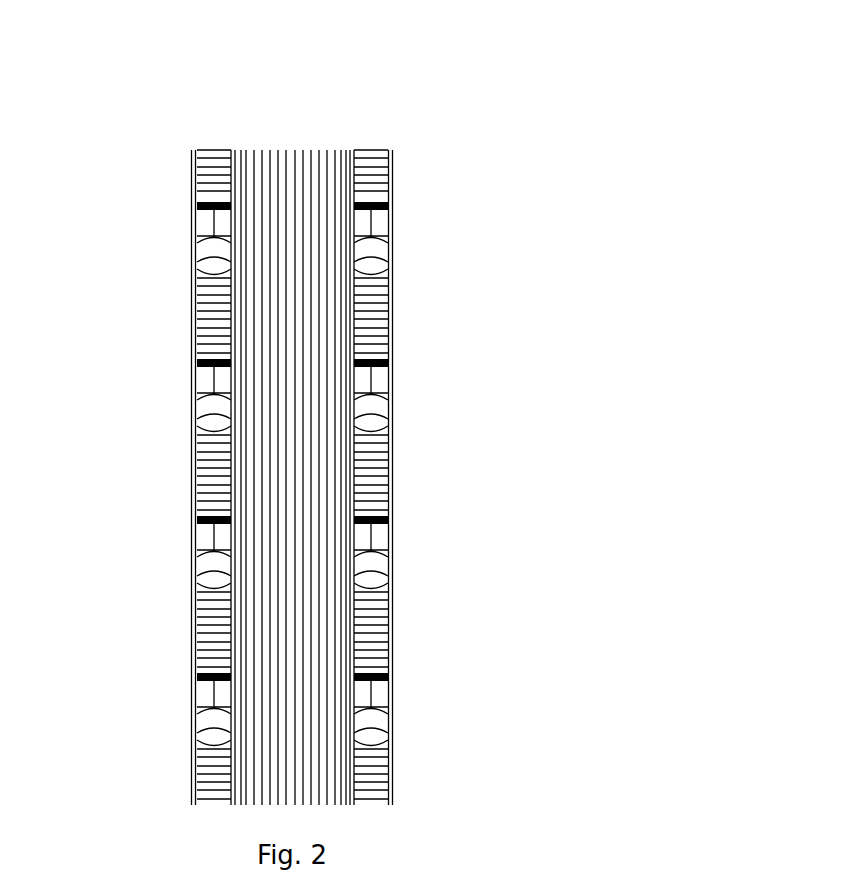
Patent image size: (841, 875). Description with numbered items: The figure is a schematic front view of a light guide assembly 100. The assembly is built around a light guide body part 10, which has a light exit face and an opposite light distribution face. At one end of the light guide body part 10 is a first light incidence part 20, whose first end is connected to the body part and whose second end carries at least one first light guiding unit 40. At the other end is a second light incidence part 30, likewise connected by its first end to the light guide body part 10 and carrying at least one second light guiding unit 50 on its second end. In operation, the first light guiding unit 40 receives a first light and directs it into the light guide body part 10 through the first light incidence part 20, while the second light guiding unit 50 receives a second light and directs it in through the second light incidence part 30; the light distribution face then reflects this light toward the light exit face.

The light guide assembly 100 is at (253, 57).
The light guide body part 10 is at (313, 267).
The first light incidence part 20 is at (393, 363).
The second light incidence part 30 is at (193, 362).
The first light guiding unit 40 is at (393, 477).
The second light guiding unit 50 is at (193, 470).